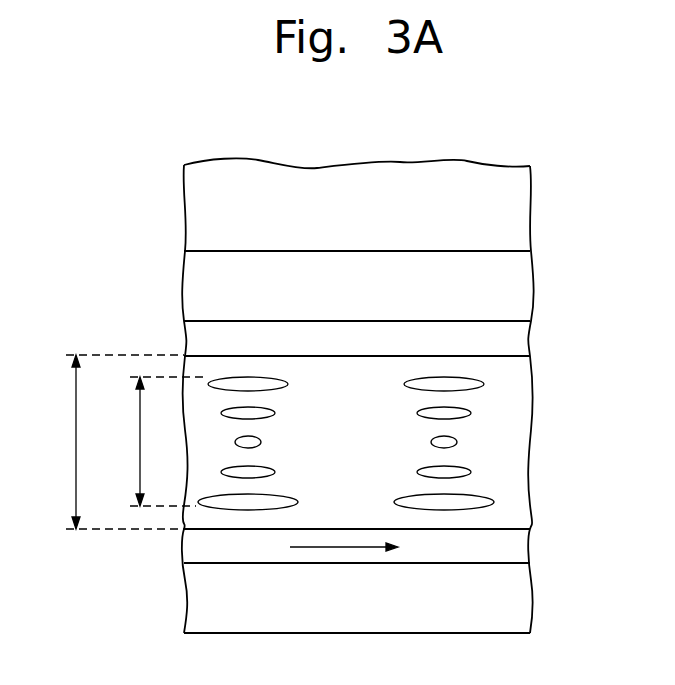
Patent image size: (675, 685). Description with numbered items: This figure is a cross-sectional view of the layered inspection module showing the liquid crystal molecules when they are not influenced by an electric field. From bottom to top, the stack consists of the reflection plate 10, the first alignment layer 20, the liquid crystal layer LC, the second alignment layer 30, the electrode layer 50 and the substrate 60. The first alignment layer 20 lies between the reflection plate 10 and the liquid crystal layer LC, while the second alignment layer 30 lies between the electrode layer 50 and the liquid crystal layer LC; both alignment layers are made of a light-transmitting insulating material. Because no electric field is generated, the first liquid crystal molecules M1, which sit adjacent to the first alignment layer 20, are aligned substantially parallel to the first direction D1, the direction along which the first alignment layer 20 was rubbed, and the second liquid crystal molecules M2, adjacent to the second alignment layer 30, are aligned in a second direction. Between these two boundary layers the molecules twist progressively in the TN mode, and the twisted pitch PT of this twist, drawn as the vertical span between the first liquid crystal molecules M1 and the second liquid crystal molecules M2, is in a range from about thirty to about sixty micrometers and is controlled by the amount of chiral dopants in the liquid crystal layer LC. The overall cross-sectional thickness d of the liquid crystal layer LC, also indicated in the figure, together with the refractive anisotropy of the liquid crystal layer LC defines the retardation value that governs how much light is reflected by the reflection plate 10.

The substrate 60 is at (520, 210).
The electrode layer 50 is at (520, 288).
The second alignment layer 30 is at (520, 338).
The liquid crystal layer LC is at (520, 445).
The second liquid crystal molecules M2 is at (484, 384).
The first liquid crystal molecules M1 is at (494, 502).
The first alignment layer 20 is at (520, 546).
The reflection plate 10 is at (520, 600).
The first direction D1 is at (363, 548).
The cross-sectional thickness d is at (119, 442).
The twisted pitch PT is at (157, 441).